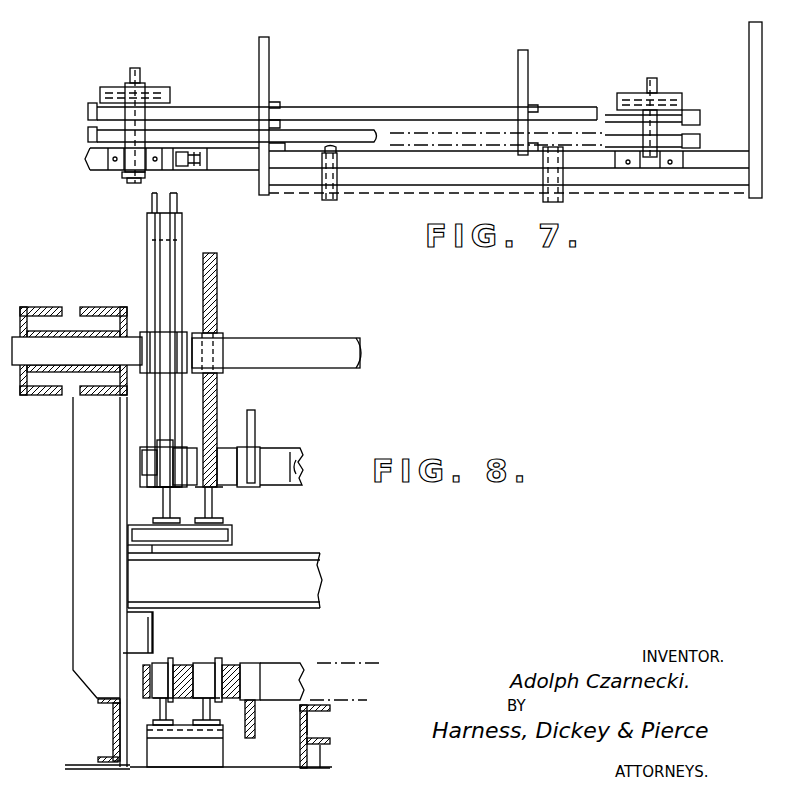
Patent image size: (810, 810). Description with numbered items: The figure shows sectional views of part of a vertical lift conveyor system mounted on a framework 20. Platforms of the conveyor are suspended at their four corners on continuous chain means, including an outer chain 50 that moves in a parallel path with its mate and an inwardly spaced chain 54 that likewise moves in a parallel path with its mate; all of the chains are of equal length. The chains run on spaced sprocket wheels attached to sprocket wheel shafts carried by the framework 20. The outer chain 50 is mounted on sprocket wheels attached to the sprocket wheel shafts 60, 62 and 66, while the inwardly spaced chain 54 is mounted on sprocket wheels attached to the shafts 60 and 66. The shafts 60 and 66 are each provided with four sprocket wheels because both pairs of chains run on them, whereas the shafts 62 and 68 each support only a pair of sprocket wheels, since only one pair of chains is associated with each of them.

In FIG. 7, the framework 20 is at (317, 193).
In FIG. 8, the framework 20 is at (250, 553).
In FIG. 7, the chain 50 is at (88, 130).
In FIG. 8, the chain 50 is at (148, 491).
In FIG. 7, the chain 54 is at (88, 106).
In FIG. 7, the sprocket wheel shaft 60 is at (128, 183).
In FIG. 7, the sprocket wheel shaft 62 is at (553, 200).
In FIG. 8, the sprocket wheel shaft 62 is at (283, 341).
In FIG. 7, the sprocket wheel shaft 66 is at (655, 80).
In FIG. 7, the sprocket wheel shaft 68 is at (333, 200).